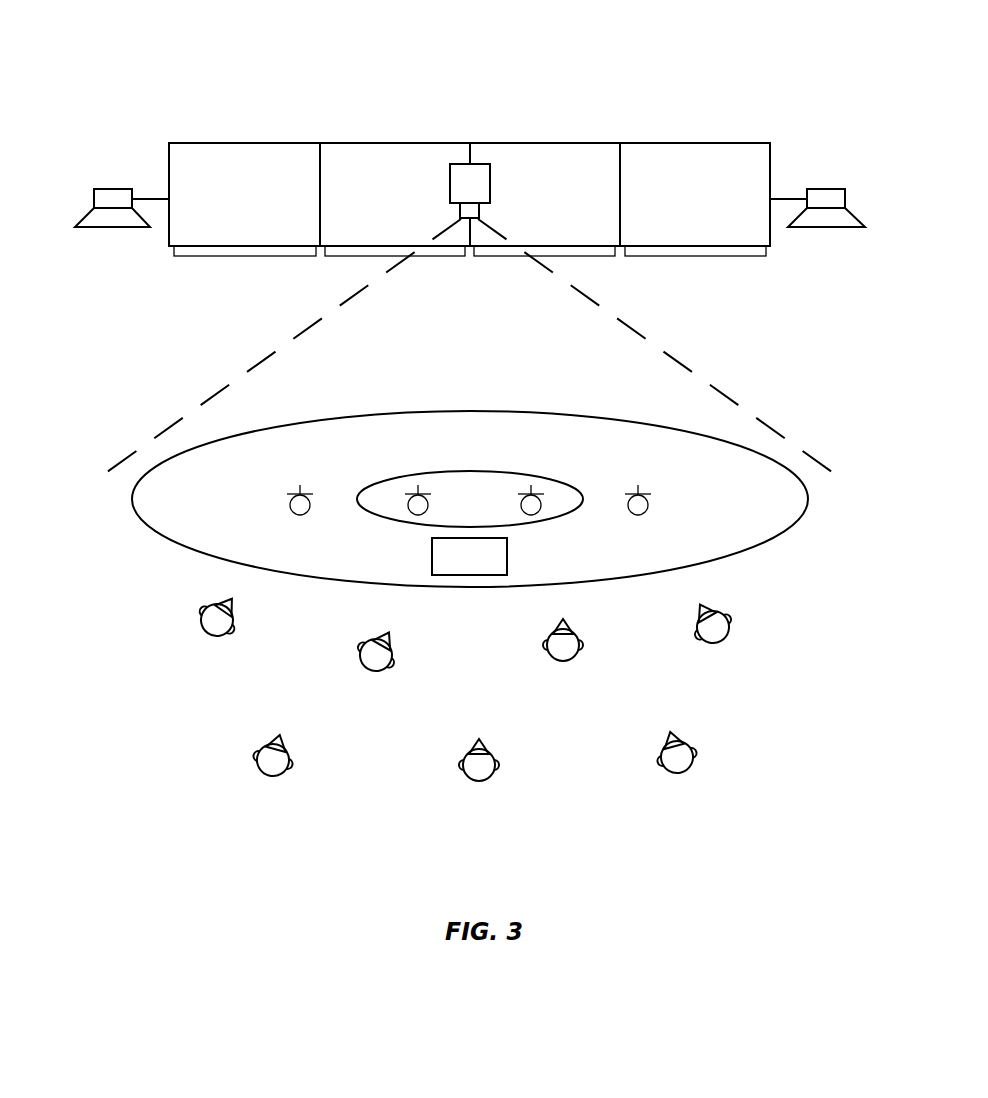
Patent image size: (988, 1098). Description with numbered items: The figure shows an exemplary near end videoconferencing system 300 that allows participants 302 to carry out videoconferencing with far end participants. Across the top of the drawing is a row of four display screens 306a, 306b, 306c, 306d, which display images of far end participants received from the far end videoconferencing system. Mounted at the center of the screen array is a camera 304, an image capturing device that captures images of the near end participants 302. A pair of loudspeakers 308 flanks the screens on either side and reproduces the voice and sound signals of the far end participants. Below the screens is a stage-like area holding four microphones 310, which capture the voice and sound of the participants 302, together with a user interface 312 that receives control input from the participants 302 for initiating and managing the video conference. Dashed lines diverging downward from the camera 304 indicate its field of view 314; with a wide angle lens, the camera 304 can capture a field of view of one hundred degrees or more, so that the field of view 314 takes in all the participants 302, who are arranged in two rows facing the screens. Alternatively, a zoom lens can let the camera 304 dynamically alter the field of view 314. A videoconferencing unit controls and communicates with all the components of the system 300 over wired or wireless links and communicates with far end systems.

The near end videoconferencing system 300 is at (758, 62).
The participants 302 is at (158, 718).
The camera 304 is at (480, 164).
The display screen 306a is at (207, 257).
The display screen 306b is at (348, 257).
The display screen 306c is at (572, 257).
The display screen 306d is at (752, 257).
The loudspeakers 308 is at (113, 188).
The microphones 310 is at (292, 492).
The user interface 312 is at (507, 557).
The field of view 314 is at (300, 337).